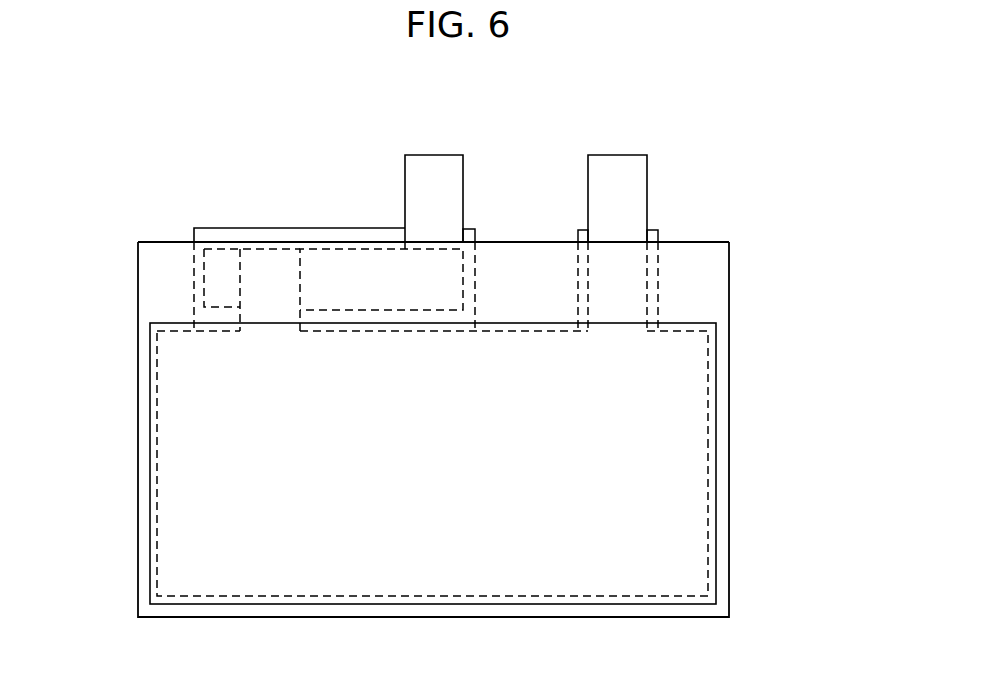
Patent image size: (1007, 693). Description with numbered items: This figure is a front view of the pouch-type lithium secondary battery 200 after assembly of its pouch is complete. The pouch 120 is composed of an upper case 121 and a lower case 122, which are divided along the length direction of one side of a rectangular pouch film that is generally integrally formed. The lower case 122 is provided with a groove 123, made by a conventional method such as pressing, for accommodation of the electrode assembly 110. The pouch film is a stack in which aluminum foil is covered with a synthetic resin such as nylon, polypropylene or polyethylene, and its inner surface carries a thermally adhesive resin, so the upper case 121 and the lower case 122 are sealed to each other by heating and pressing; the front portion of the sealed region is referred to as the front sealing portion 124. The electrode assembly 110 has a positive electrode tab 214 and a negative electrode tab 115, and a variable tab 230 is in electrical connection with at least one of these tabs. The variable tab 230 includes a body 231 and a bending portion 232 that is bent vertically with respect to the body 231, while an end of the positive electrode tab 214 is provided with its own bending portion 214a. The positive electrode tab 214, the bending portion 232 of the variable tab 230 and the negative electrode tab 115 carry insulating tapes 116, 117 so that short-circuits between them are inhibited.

The pouch-type lithium secondary battery 200 is at (116, 104).
The electrode assembly 110 is at (157, 450).
The negative electrode tab 115 is at (621, 163).
The insulating tape 116 is at (218, 228).
The insulating tape 117 is at (653, 228).
The pouch 120 is at (823, 425).
The upper case 121 is at (730, 427).
The lower case 122 is at (717, 475).
The groove 123 is at (709, 531).
The front sealing portion 124 is at (535, 262).
The positive electrode tab 214 is at (212, 315).
The bending portion 214a is at (255, 275).
The variable tab 230 is at (322, 122).
The body 231 is at (413, 175).
The bending portion 232 is at (345, 263).